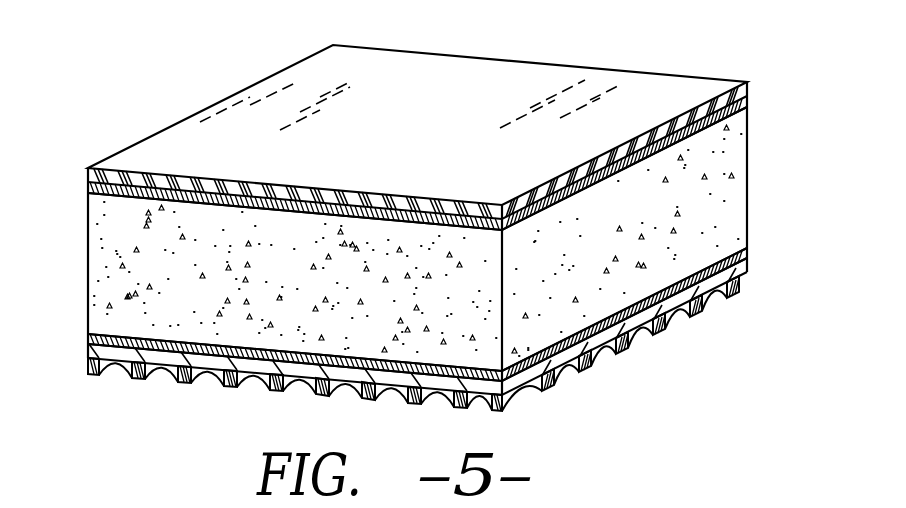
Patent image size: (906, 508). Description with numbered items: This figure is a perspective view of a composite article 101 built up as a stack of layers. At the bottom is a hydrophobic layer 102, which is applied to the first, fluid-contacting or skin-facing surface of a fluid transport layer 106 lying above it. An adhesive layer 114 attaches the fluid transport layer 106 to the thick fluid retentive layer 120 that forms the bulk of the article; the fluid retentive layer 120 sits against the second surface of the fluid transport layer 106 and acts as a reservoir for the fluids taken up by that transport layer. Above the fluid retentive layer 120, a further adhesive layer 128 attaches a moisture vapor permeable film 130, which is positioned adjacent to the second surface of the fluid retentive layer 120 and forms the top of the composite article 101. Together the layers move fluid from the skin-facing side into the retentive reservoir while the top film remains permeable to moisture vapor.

The composite article 101 is at (175, 86).
The hydrophobic layer 102 is at (607, 362).
The fluid transport layer 106 is at (750, 263).
The adhesive layer 114 is at (749, 252).
The fluid retentive layer 120 is at (735, 165).
The adhesive layer 128 is at (88, 186).
The moisture vapor permeable film 130 is at (665, 90).